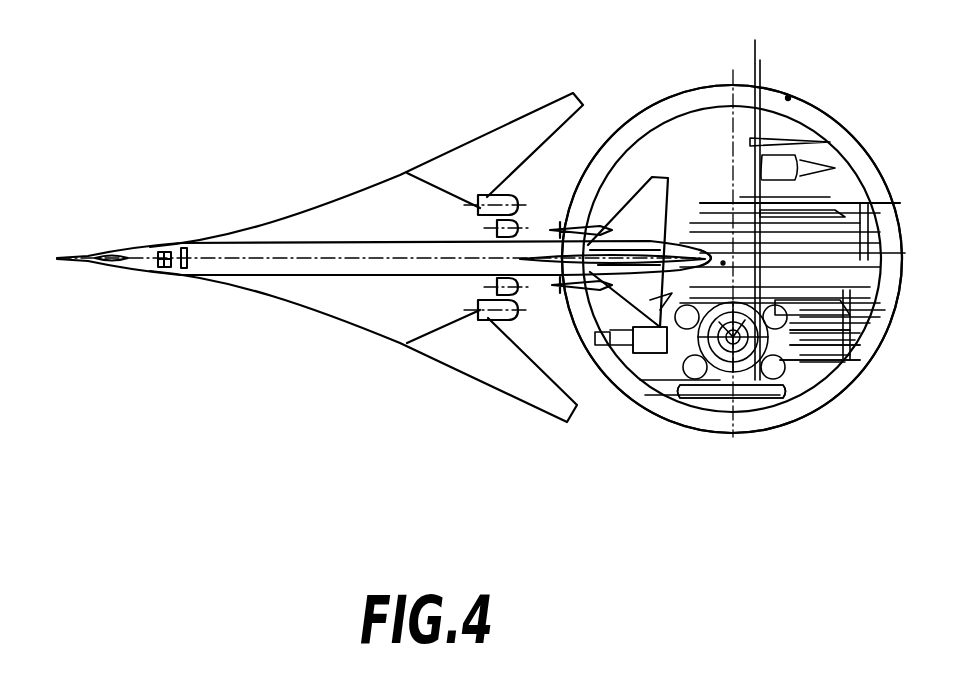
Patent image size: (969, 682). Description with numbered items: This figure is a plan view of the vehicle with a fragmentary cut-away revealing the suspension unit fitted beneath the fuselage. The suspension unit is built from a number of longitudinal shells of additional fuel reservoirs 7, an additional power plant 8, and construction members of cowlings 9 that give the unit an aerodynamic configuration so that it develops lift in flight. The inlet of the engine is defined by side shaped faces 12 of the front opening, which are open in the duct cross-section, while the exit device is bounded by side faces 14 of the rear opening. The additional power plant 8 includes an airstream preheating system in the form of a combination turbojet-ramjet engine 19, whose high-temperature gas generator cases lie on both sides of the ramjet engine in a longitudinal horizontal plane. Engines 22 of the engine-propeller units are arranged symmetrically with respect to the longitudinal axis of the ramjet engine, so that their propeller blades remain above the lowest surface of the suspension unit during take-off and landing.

The additional power plant 8 is at (723, 263).
The combination turbojet-ramjet engine 19 is at (760, 190).
The construction members of cowlings 9 is at (788, 98).
The side faces of the rear opening 14 is at (868, 203).
The side shaped faces of the front opening 12 is at (672, 293).
The engines of the engine-propeller units 22 is at (797, 370).
The longitudinal shells of additional fuel reservoirs 7 is at (845, 340).